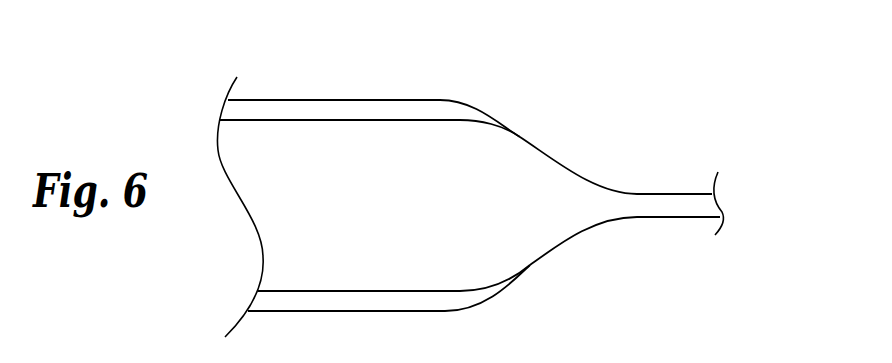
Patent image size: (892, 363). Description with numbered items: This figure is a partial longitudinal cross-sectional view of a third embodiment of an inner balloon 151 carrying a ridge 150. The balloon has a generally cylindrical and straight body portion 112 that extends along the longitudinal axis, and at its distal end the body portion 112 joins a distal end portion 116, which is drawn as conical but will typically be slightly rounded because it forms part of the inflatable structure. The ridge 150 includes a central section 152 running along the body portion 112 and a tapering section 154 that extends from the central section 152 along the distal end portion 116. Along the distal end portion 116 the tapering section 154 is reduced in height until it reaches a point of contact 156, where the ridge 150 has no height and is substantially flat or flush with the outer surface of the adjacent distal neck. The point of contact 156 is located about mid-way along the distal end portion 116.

The ridge 150 is at (470, 169).
The central section 152 is at (288, 100).
The tapering section 154 is at (481, 113).
The inner balloon 151 is at (488, 175).
The point of contact 156 is at (557, 162).
The body portion 112 is at (332, 221).
The distal end portion 116 is at (516, 220).